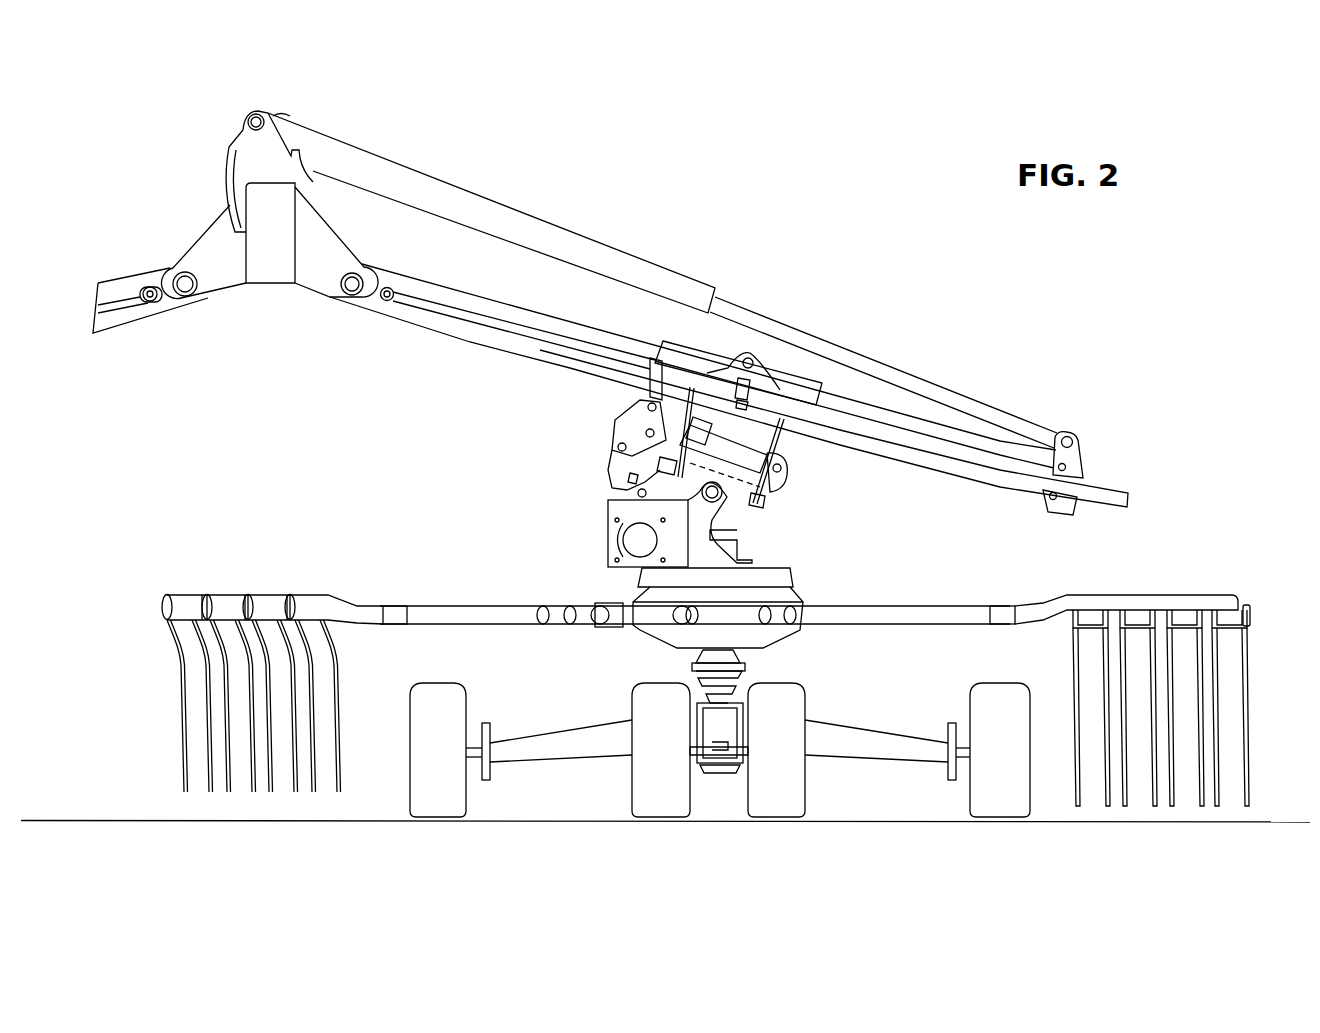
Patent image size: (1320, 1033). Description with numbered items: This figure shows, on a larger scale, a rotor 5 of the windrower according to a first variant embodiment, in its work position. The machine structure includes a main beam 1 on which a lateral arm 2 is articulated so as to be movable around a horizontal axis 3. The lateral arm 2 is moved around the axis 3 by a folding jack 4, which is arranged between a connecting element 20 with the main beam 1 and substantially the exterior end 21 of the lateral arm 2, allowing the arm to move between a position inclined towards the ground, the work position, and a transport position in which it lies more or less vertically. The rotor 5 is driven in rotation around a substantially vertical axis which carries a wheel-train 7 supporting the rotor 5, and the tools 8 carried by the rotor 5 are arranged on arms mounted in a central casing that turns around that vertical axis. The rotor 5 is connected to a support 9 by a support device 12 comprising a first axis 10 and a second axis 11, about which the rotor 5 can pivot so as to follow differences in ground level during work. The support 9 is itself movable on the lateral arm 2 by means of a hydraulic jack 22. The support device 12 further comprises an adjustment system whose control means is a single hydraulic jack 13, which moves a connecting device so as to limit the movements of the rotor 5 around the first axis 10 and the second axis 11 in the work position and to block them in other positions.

The main beam 1 is at (265, 265).
The lateral arm 2 is at (455, 330).
The horizontal axis 3 is at (351, 289).
The folding jack 4 is at (513, 216).
The rotor 5 is at (690, 538).
The wheel-train 7 is at (450, 702).
The tools 8 is at (205, 676).
The support 9 is at (800, 383).
The first axis 10 is at (720, 496).
The second axis 11 is at (782, 495).
The support device 12 is at (578, 469).
The hydraulic jack 13 is at (718, 437).
The connecting element 20 is at (255, 148).
The exterior end 21 is at (1078, 450).
The hydraulic jack 22 is at (937, 447).